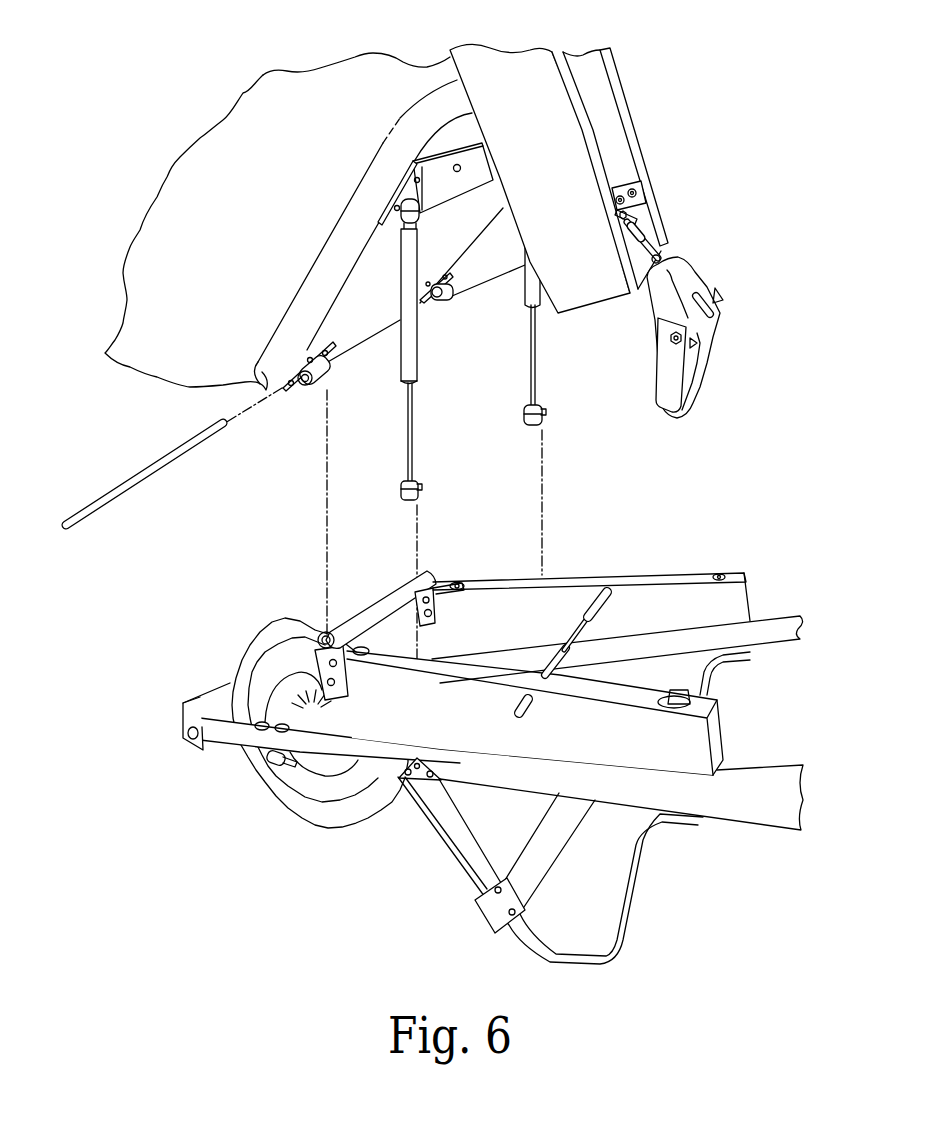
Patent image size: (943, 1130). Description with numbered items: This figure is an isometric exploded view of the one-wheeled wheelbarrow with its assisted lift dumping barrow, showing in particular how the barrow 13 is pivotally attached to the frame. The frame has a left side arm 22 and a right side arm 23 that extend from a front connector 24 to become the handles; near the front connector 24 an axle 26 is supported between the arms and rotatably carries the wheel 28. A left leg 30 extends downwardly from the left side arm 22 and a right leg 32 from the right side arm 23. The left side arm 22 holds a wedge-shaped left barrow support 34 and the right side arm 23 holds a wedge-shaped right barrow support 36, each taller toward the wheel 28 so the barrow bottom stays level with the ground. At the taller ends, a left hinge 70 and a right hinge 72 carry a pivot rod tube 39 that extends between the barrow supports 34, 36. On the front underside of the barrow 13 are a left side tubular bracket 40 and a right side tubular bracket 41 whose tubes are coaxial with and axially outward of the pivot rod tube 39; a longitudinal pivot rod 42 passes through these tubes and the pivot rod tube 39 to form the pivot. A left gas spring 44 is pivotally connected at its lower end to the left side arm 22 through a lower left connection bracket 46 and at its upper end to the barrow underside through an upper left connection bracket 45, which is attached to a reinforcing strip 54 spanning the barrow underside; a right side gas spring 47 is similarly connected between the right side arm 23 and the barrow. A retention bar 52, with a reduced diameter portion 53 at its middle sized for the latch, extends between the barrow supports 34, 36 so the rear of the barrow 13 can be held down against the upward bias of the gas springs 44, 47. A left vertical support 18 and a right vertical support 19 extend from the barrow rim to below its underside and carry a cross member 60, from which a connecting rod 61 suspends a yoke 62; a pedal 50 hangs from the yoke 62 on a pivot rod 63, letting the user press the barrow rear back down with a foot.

The barrow 13 is at (271, 91).
The left vertical support 18 is at (501, 50).
The right vertical support 19 is at (603, 83).
The left side arm 22 is at (800, 800).
The right side arm 23 is at (795, 628).
The front connector 24 is at (207, 692).
The axle 26 is at (267, 763).
The wheel 28 is at (337, 813).
The left leg 30 is at (659, 847).
The right leg 32 is at (728, 666).
The left barrow support 34 is at (714, 732).
The right barrow support 36 is at (736, 598).
The pivot rod tube 39 is at (375, 607).
The left side tubular bracket 40 is at (322, 357).
The right side tubular bracket 41 is at (454, 283).
The longitudinal pivot rod 42 is at (140, 479).
The gas spring 44 is at (411, 248).
The upper left connection bracket 45 is at (411, 187).
The lower left connection bracket 46 is at (432, 760).
The right side gas spring 47 is at (524, 293).
The pedal 50 is at (671, 354).
The retention bar 52 is at (527, 711).
The reduced diameter portion 53 is at (577, 630).
The reinforcing strip 54 is at (478, 164).
The cross member 60 is at (640, 190).
The connecting rod 61 is at (648, 228).
The yoke 62 is at (687, 273).
The pivot rod 63 is at (707, 280).
The left hinge 70 is at (348, 677).
The right hinge 72 is at (439, 612).